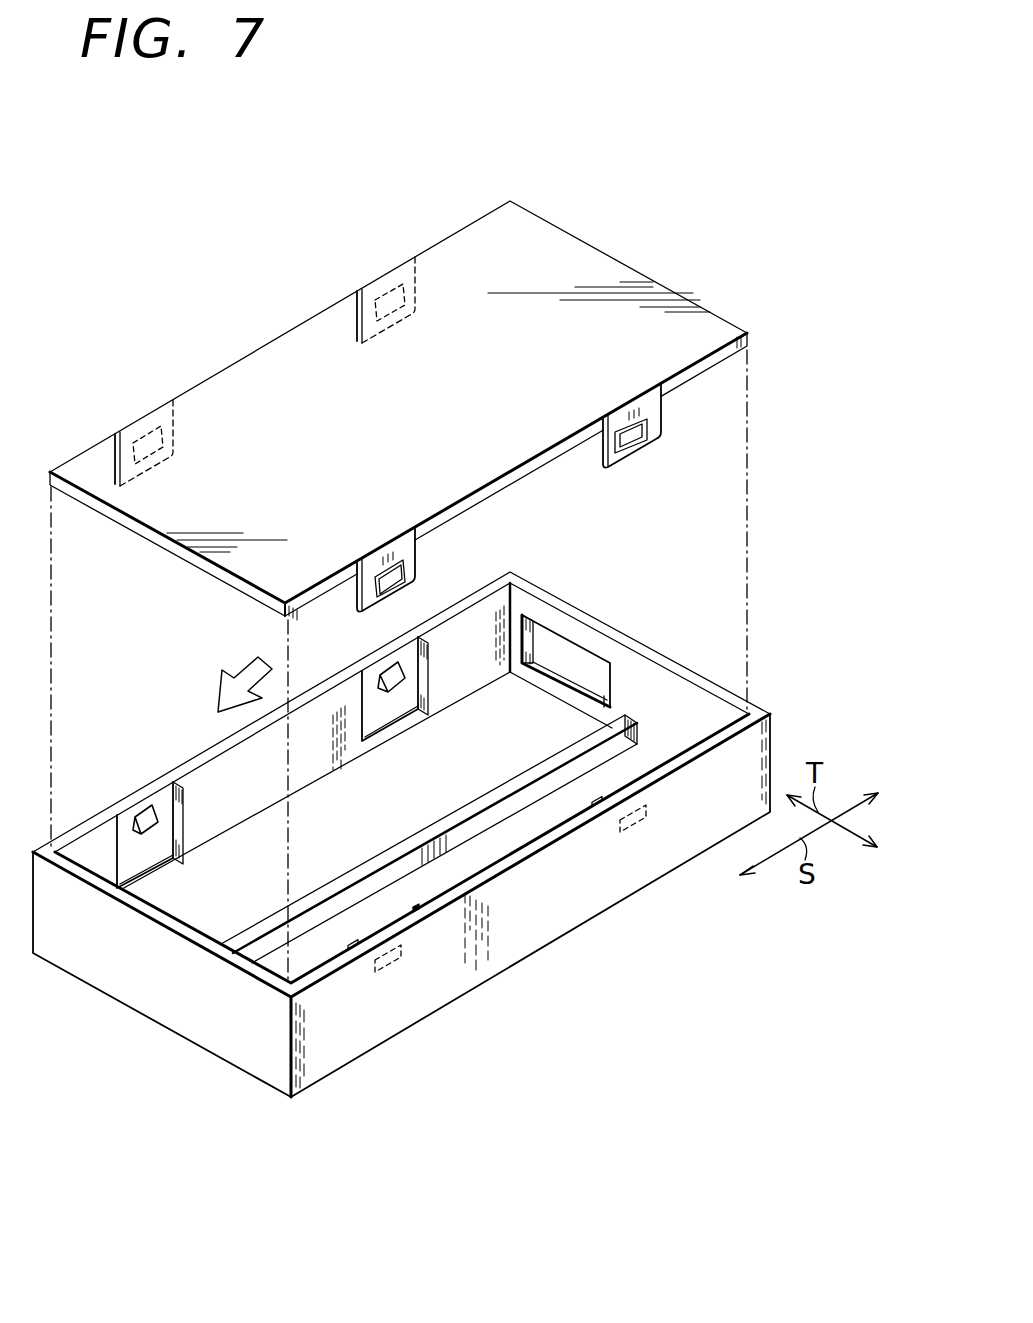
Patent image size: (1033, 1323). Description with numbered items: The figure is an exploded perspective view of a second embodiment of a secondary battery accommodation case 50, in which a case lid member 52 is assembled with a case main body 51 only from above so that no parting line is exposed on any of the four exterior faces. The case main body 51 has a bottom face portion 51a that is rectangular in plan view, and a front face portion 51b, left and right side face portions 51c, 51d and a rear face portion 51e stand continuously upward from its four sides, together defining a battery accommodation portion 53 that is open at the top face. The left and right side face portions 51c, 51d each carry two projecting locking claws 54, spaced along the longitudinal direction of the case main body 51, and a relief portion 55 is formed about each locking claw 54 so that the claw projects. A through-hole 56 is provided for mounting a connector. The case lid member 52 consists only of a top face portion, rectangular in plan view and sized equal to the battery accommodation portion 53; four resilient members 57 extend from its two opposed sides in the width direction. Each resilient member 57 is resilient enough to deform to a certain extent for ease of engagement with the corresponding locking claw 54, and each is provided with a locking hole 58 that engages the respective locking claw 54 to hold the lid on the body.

The secondary battery accommodation case 50 is at (614, 242).
The case main body 51 is at (265, 1085).
The bottom face portion 51a is at (185, 912).
The front face portion 51b is at (165, 1002).
The left side face portion 51c is at (530, 955).
The right side face portion 51d is at (205, 748).
The rear face portion 51e is at (680, 668).
The case lid member 52 is at (470, 225).
The battery accommodation portion 53 is at (520, 840).
The locking claw 54 is at (388, 672).
The relief portion 55 is at (130, 785).
The through-hole 56 is at (605, 688).
The resilient member 57 is at (357, 305).
The locking hole 58 is at (385, 280).